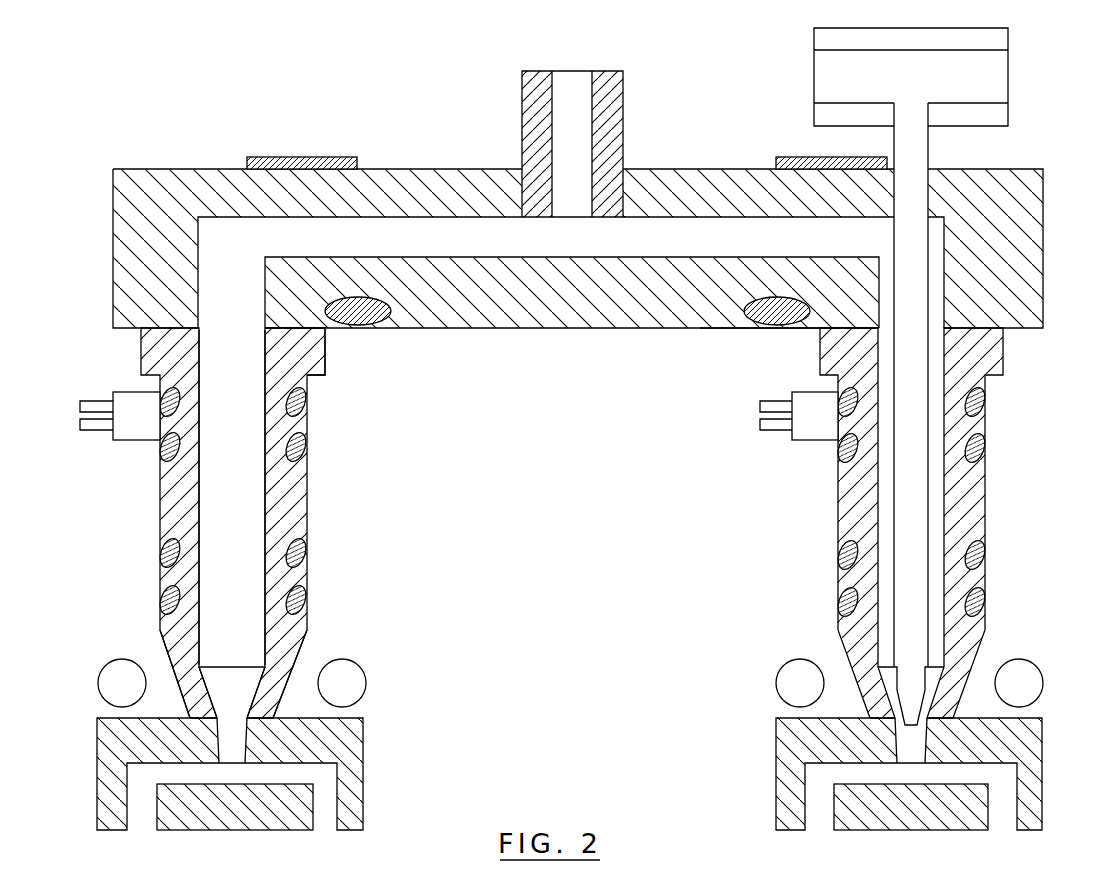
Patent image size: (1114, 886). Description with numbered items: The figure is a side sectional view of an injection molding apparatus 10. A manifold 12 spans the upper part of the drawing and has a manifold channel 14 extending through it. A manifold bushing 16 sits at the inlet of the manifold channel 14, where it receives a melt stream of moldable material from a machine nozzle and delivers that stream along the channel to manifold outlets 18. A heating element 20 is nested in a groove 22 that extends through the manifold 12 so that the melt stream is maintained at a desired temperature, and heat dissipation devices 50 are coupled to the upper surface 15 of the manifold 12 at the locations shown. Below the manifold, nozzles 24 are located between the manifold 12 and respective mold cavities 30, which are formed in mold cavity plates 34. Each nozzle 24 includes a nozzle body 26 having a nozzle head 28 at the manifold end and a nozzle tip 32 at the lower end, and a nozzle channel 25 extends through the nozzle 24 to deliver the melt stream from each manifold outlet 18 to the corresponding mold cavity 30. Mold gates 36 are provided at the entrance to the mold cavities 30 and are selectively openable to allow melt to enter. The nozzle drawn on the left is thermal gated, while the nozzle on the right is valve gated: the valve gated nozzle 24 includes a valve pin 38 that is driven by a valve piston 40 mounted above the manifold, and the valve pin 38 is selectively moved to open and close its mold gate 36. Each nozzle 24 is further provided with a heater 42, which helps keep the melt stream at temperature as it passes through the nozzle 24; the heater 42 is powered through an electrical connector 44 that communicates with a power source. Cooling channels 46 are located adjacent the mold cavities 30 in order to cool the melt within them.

The injection molding apparatus 10 is at (143, 91).
The manifold 12 is at (125, 288).
The manifold channel 14 is at (440, 233).
The upper surface 15 is at (138, 167).
The manifold bushing 16 is at (613, 92).
The manifold outlet 18 is at (250, 328).
The heating element 20 is at (767, 315).
The groove 22 is at (747, 310).
The nozzle 24 is at (300, 508).
The nozzle channel 25 is at (247, 551).
The nozzle body 26 is at (300, 475).
The nozzle head 28 is at (312, 362).
The mold cavity 30 is at (327, 792).
The nozzle tip 32 is at (293, 662).
The mold cavity plate 34 is at (348, 733).
The mold gate 36 is at (903, 738).
The valve pin 38 is at (900, 492).
The valve piston 40 is at (993, 75).
The heater 42 is at (840, 555).
The electrical connector 44 is at (800, 433).
The cooling channel 46 is at (787, 677).
The heat dissipation device 50 is at (302, 148).